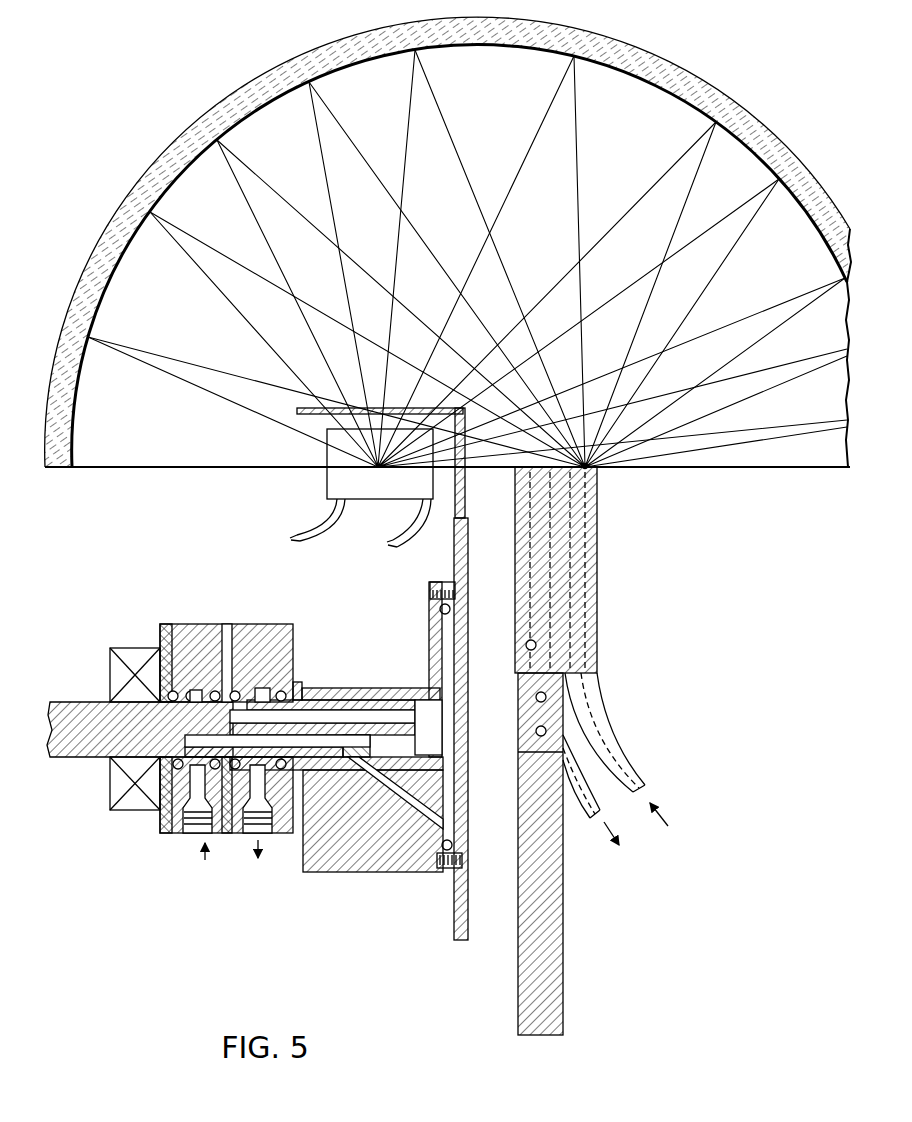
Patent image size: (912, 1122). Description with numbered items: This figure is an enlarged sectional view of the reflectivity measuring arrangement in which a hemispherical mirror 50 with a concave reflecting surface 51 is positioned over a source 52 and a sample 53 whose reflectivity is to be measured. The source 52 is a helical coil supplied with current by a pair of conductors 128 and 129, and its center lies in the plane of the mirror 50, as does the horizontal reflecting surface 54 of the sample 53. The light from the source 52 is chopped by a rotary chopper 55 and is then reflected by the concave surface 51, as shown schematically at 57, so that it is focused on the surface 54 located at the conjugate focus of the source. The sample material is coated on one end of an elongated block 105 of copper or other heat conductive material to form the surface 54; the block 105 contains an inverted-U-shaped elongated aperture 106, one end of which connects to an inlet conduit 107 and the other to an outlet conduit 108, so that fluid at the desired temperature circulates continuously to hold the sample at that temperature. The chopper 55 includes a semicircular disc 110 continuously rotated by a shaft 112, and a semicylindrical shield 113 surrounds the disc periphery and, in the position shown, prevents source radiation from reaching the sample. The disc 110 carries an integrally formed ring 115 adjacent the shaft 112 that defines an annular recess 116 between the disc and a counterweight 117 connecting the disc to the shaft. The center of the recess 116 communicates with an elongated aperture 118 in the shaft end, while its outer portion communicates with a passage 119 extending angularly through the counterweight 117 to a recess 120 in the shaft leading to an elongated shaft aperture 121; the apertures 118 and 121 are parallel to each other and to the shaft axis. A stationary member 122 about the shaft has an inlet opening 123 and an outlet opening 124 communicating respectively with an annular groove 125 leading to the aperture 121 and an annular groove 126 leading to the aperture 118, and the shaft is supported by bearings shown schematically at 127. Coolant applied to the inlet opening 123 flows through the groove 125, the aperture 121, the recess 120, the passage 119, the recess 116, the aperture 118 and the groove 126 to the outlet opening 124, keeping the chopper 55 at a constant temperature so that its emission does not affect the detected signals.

The hemispherical mirror 50 is at (236, 100).
The concave reflecting surface 51 is at (270, 106).
The source 52 is at (327, 488).
The sample 53 is at (603, 587).
The horizontal reflecting surface 54 is at (598, 471).
The rotary chopper 55 is at (354, 878).
The reflected light 57 is at (268, 203).
The elongated block 105 is at (597, 537).
The elongated aperture 106 is at (592, 622).
The inlet conduit 107 is at (612, 722).
The outlet conduit 108 is at (580, 818).
The semicircular disc 110 is at (465, 497).
The shaft 112 is at (57, 760).
The semicylindrical shield 113 is at (385, 408).
The ring 115 is at (431, 613).
The annular recess 116 is at (441, 656).
The counterweight 117 is at (381, 872).
The elongated aperture 118 is at (360, 718).
The passage 119 is at (430, 830).
The recess 120 is at (355, 765).
The elongated shaft aperture 121 is at (320, 740).
The stationary member 122 is at (183, 624).
The inlet opening 123 is at (190, 835).
The outlet opening 124 is at (242, 835).
The annular groove 125 is at (166, 780).
The annular groove 126 is at (262, 688).
The bearings 127 is at (137, 648).
The conductor 128 is at (296, 535).
The conductor 129 is at (397, 542).